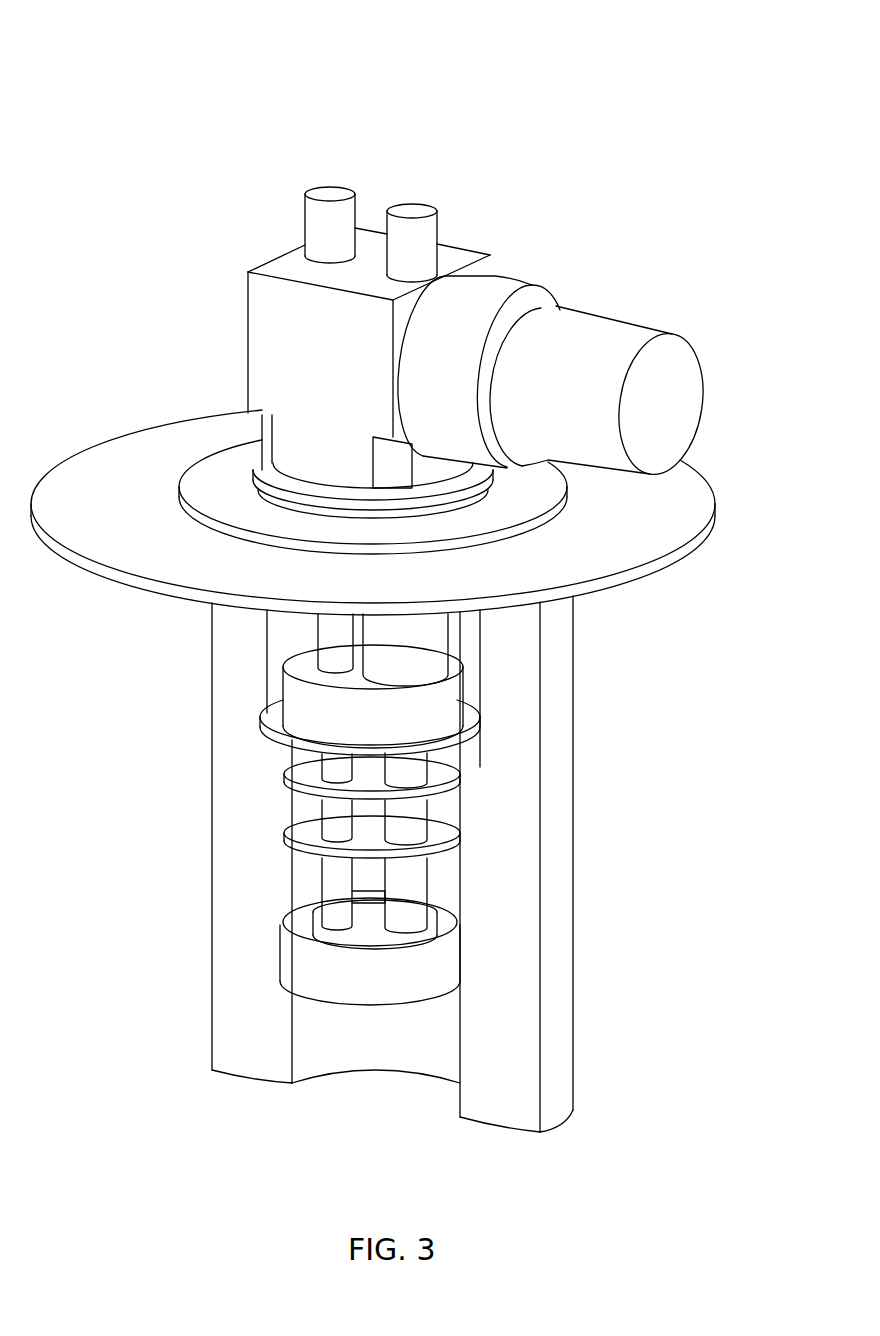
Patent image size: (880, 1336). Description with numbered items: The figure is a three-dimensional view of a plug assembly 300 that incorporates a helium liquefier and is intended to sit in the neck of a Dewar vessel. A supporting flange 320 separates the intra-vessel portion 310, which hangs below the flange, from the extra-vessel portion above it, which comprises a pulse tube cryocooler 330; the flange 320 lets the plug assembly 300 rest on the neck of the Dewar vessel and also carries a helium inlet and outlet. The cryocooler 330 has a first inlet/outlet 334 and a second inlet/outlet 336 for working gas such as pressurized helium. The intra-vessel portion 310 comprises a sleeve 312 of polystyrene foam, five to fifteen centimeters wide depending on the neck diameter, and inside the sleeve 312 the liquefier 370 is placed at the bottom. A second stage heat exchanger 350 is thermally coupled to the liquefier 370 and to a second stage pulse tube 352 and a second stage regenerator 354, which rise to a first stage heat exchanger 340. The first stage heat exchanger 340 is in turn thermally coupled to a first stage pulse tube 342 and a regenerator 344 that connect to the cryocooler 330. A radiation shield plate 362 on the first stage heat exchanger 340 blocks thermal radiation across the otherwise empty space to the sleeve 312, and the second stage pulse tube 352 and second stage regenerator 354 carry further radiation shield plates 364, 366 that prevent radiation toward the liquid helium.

The plug assembly 300 is at (72, 61).
The intra-vessel portion 310 is at (267, 713).
The sleeve 312 is at (227, 883).
The supporting flange 320 is at (693, 538).
The cryocooler 330 is at (247, 333).
The first inlet/outlet 334 is at (304, 226).
The second terminal 336 is at (414, 203).
The first stage heat exchanger 340 is at (463, 705).
The first stage pulse tube 342 is at (290, 657).
The second stage regenerator 344 is at (448, 633).
The second stage heat exchanger 350 is at (383, 947).
The second stage pulse tube 352 is at (317, 883).
The second stage regenerator 354 is at (428, 875).
The first plate 362 is at (482, 740).
The radiation shield plate 364 is at (460, 793).
The radiation shield plate 366 is at (460, 848).
The liquefier 370 is at (352, 992).